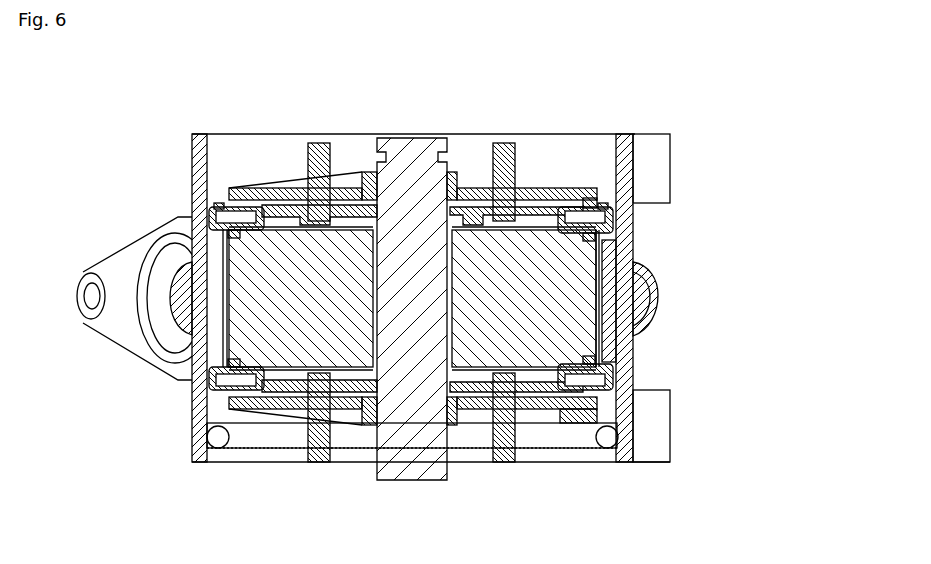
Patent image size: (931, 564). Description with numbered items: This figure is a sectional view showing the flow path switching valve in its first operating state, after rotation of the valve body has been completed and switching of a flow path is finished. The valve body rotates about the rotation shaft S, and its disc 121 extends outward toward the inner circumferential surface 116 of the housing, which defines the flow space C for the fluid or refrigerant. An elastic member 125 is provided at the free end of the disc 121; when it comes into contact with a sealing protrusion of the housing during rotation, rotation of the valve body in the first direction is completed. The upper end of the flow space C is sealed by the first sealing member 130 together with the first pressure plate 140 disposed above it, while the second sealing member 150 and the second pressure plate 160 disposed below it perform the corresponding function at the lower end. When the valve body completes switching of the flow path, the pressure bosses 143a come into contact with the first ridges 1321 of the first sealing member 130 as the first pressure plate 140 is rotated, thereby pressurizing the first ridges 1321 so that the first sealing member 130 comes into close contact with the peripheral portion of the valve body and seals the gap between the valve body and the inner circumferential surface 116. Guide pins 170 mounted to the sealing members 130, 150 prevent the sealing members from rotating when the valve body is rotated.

The first sealing member 130 is at (613, 197).
The second sealing member 150 is at (219, 398).
The rotation shaft S is at (410, 481).
The disc 121 is at (297, 340).
The inner circumferential surface 116 is at (601, 240).
The first pressure plate 140 is at (268, 178).
The first ridges 1321 is at (210, 200).
The elastic member 125 is at (215, 215).
The pressure bosses 143a is at (220, 205).
The guide pins 170 is at (318, 142).
The second pressure plate 160 is at (573, 412).
The flow space C is at (227, 305).